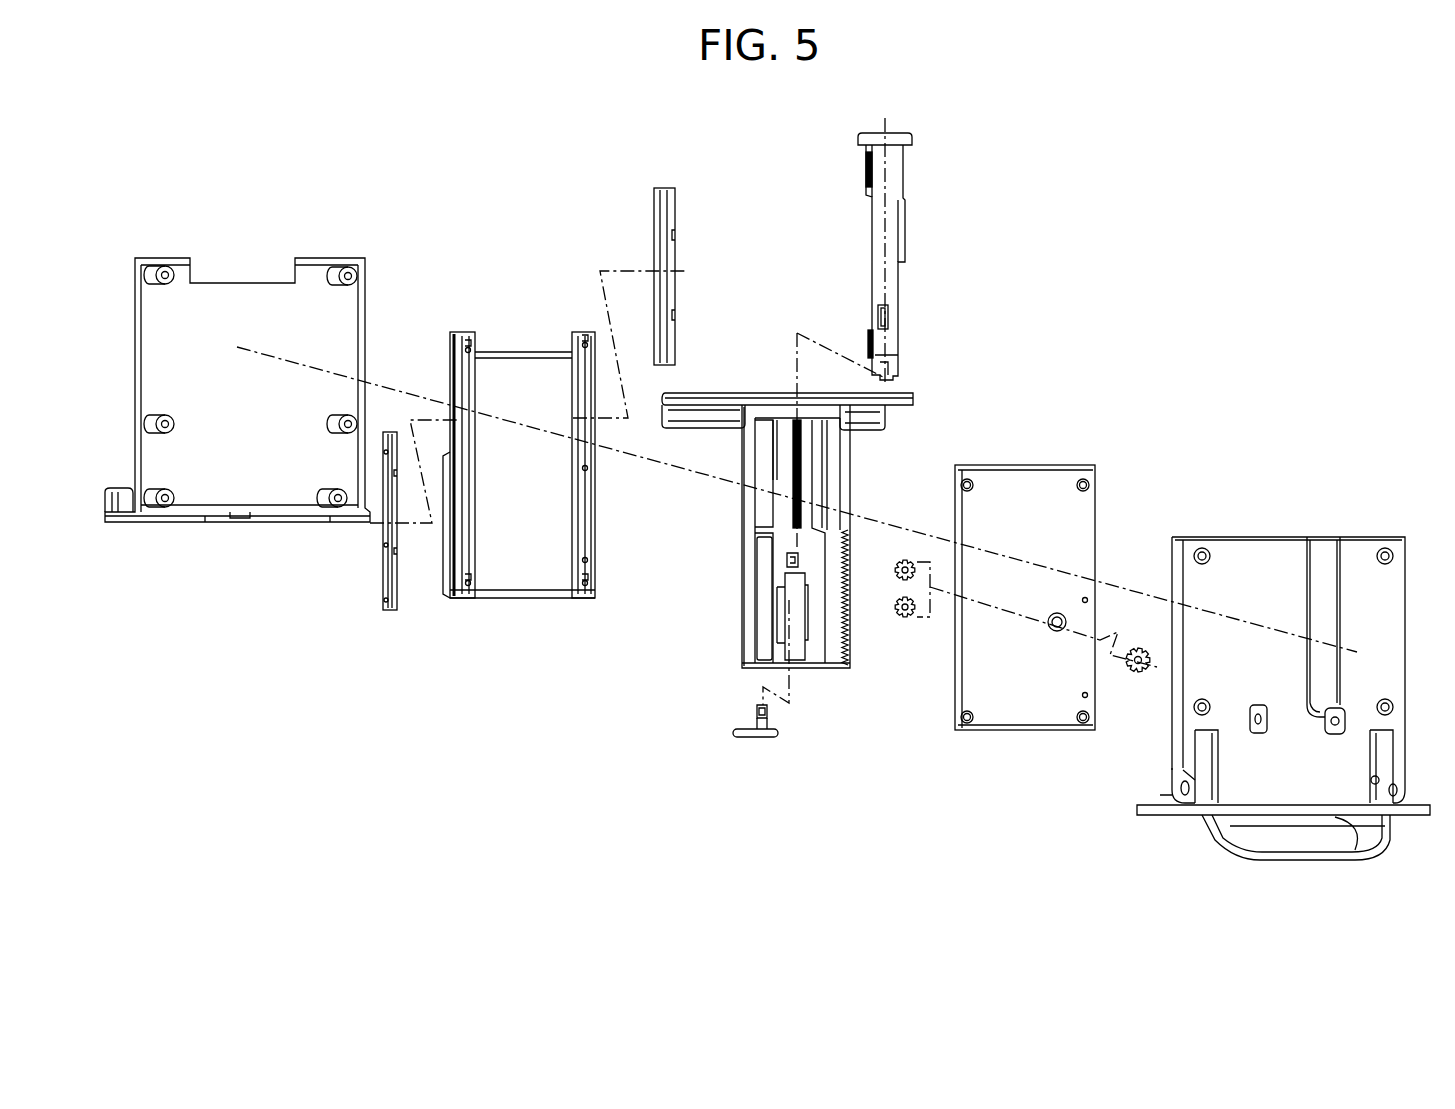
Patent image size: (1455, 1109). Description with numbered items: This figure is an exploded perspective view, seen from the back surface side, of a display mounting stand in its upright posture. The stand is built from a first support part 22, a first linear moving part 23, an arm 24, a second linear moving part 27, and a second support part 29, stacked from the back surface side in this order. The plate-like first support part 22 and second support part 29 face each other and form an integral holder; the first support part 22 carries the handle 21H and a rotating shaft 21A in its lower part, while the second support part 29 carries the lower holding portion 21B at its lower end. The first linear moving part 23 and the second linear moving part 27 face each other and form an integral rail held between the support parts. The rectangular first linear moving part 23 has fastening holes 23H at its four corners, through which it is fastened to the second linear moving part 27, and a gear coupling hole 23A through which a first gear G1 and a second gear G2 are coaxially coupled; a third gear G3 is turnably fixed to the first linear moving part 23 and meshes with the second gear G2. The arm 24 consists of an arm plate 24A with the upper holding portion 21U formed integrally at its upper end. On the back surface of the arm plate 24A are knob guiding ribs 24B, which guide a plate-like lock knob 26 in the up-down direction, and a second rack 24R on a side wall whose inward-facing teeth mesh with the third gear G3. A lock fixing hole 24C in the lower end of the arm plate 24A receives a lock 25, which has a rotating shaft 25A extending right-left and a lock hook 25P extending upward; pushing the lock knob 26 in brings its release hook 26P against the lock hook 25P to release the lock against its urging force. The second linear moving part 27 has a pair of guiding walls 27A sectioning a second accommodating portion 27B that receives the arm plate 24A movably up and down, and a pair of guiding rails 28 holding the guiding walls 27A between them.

The rotating shaft 21A is at (1403, 792).
The lower holding portion 21B is at (108, 512).
The handle 21H is at (1350, 862).
The upper holding portion 21U is at (723, 393).
The first support part 22 is at (1185, 818).
The first linear moving part 23 is at (1062, 633).
The gear coupling hole 23A is at (1057, 632).
The fastening holes 23H is at (1092, 496).
The arm 24 is at (782, 600).
The arm plate 24A is at (745, 512).
The knob guiding ribs 24B is at (818, 482).
The lock fixing hole 24C is at (790, 590).
The second rack 24R is at (835, 660).
The lock 25 is at (713, 744).
The rotating shaft 25A is at (735, 733).
The lock hook 25P is at (755, 710).
The lock knob 26 is at (919, 256).
The release hook 26P is at (897, 360).
The second linear moving part 27 is at (519, 472).
The guiding walls 27A is at (472, 350).
The second accommodating portion 27B is at (548, 598).
The guiding rails 28 is at (654, 207).
The second support part 29 is at (172, 522).
The first gear G1 is at (1140, 670).
The second gear G2 is at (905, 618).
The third gear G3 is at (897, 572).